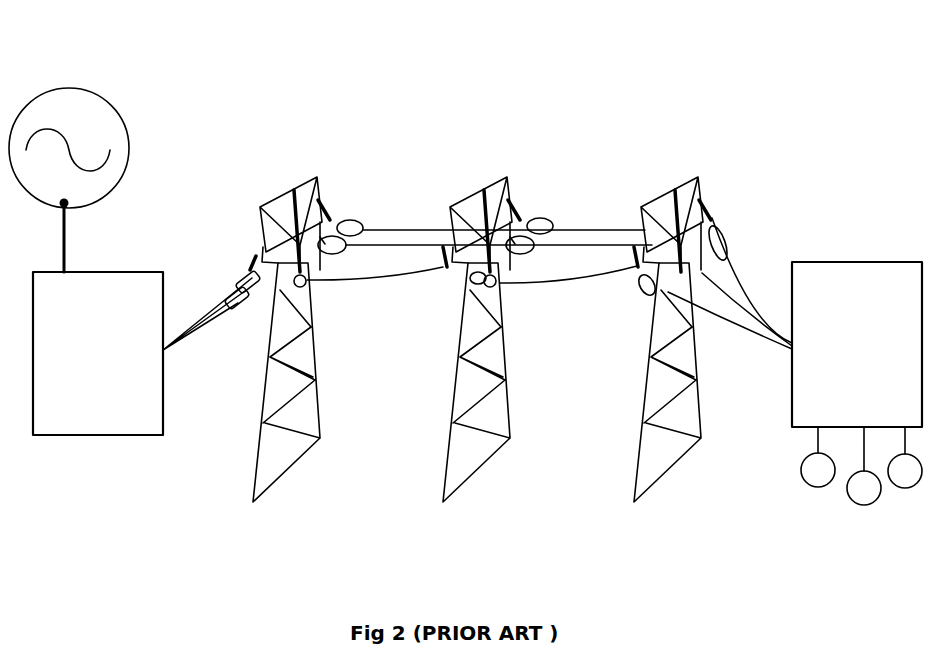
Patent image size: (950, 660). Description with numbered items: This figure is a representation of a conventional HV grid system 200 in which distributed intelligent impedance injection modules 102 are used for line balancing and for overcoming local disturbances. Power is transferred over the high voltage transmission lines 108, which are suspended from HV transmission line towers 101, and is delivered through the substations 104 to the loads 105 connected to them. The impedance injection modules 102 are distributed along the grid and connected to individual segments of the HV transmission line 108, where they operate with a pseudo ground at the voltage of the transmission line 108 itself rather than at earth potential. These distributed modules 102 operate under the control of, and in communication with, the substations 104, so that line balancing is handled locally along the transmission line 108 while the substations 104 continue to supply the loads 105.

The HV grid system 200 is at (535, 52).
The HV transmission line tower 101 is at (257, 253).
The impedance injection module 102 is at (350, 220).
The HV transmission line 108 is at (580, 227).
The substation 104 is at (112, 262).
The load 105 is at (860, 505).